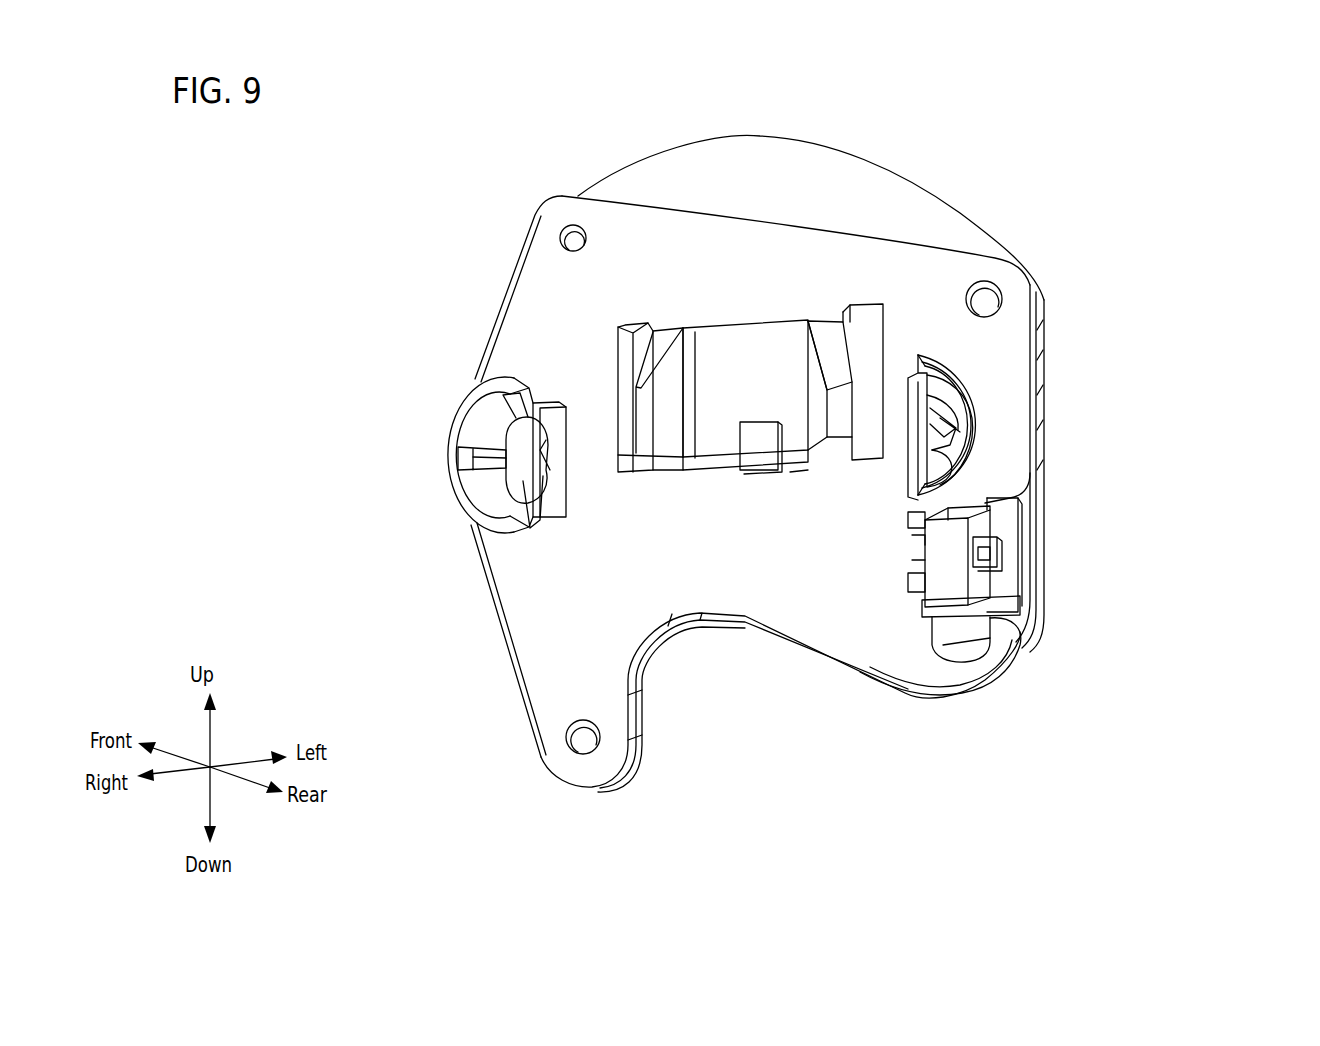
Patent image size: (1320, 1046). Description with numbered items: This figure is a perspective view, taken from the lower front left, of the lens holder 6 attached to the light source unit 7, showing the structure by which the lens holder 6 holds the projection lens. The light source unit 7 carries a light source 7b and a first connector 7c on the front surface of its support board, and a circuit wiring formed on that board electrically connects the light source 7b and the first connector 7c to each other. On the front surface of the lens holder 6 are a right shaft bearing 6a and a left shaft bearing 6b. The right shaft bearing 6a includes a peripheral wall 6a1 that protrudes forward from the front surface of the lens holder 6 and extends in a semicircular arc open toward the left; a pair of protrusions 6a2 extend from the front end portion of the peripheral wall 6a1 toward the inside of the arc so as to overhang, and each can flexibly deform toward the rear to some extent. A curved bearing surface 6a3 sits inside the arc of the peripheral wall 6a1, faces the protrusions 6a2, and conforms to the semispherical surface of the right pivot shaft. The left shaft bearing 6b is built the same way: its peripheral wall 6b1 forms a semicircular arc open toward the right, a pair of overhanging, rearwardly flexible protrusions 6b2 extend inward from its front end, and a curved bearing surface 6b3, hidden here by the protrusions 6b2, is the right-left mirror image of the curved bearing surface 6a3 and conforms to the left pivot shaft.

The lens holder 6 is at (903, 726).
The right shaft bearing 6a is at (394, 469).
The peripheral wall 6a1 is at (468, 396).
The protrusions 6a2 is at (472, 430).
The curved bearing surface 6a3 is at (517, 524).
The left shaft bearing 6b is at (1106, 407).
The peripheral wall 6b1 is at (957, 363).
The protrusions 6b2 is at (960, 397).
The curved bearing surface 6b3 is at (953, 466).
The light source unit 7 is at (833, 162).
The light source 7b is at (757, 466).
The first connector 7c is at (1012, 590).